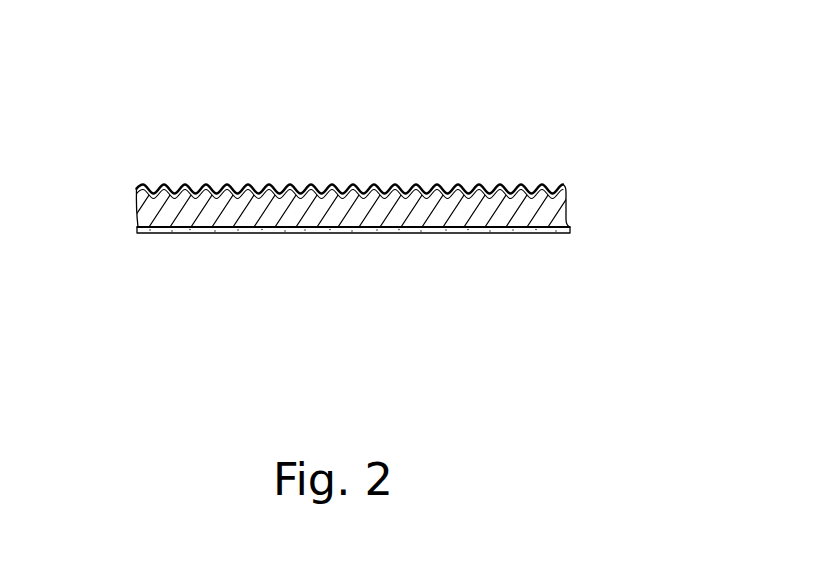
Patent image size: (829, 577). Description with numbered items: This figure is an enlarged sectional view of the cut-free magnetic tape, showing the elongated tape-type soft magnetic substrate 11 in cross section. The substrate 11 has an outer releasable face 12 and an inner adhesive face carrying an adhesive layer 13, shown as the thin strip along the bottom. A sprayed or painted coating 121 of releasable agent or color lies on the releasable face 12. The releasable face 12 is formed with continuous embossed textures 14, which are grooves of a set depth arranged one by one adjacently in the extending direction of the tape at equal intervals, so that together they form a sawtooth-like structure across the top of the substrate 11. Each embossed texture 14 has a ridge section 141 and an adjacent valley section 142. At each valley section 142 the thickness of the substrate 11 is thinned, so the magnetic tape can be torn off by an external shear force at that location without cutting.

The soft magnetic substrate 11 is at (157, 208).
The releasable face 12 is at (146, 140).
The coating 121 is at (563, 187).
The adhesive layer 13 is at (551, 236).
The embossed textures 14 is at (495, 187).
The ridge section 141 is at (274, 185).
The valley section 142 is at (405, 186).